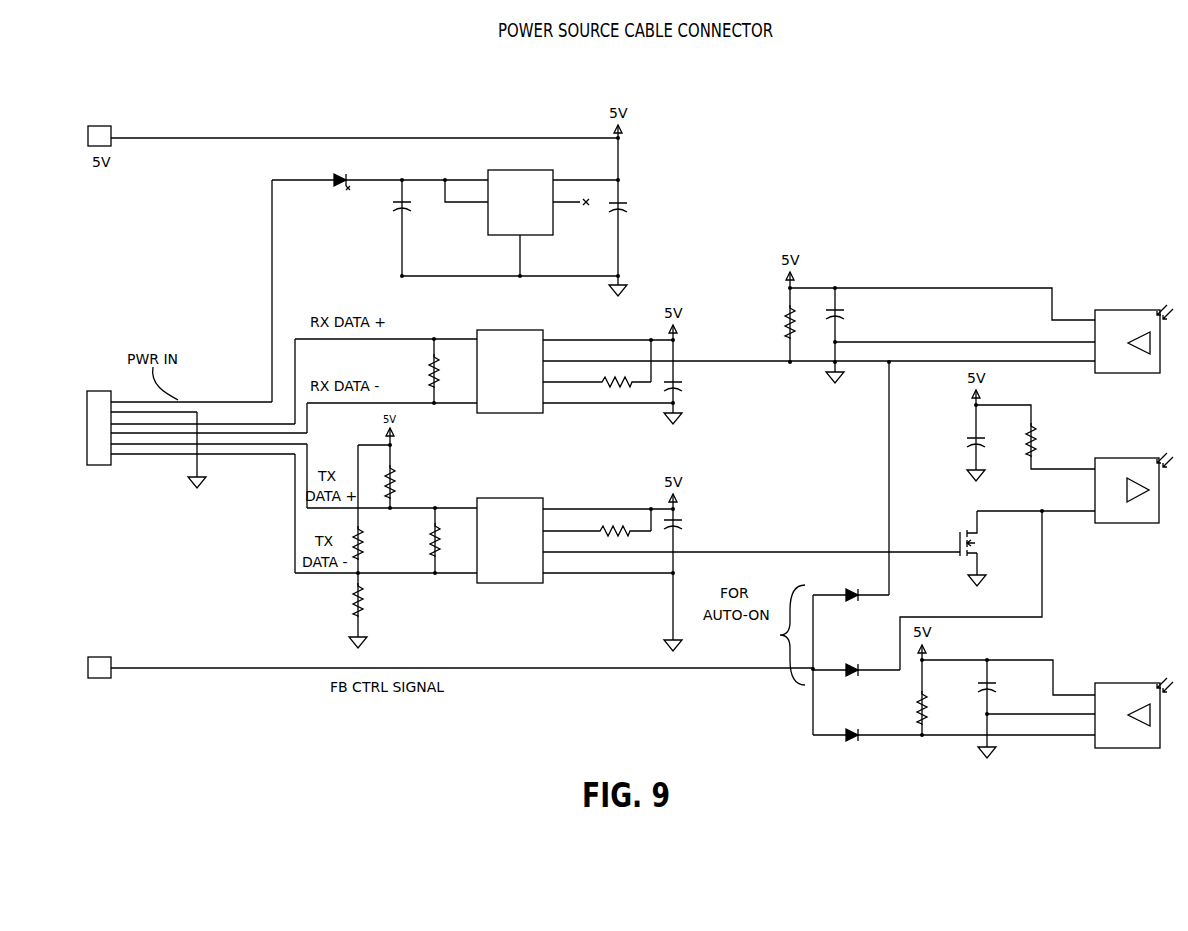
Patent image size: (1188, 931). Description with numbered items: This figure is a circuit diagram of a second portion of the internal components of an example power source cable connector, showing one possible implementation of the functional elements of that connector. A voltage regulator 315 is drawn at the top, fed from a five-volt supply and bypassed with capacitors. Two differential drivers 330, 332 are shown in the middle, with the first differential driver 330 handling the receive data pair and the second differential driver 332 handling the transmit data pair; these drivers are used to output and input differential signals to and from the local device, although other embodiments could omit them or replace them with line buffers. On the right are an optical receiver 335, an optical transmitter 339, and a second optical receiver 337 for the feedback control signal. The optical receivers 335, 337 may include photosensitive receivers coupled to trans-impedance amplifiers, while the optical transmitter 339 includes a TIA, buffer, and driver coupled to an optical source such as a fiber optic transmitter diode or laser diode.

The voltage regulator 315 is at (518, 191).
The differential driver 330 is at (510, 361).
The differential driver 332 is at (507, 528).
The optical receiver 335 is at (1128, 331).
The optical transmitter 339 is at (1130, 480).
The optical receiver 337 is at (1127, 704).